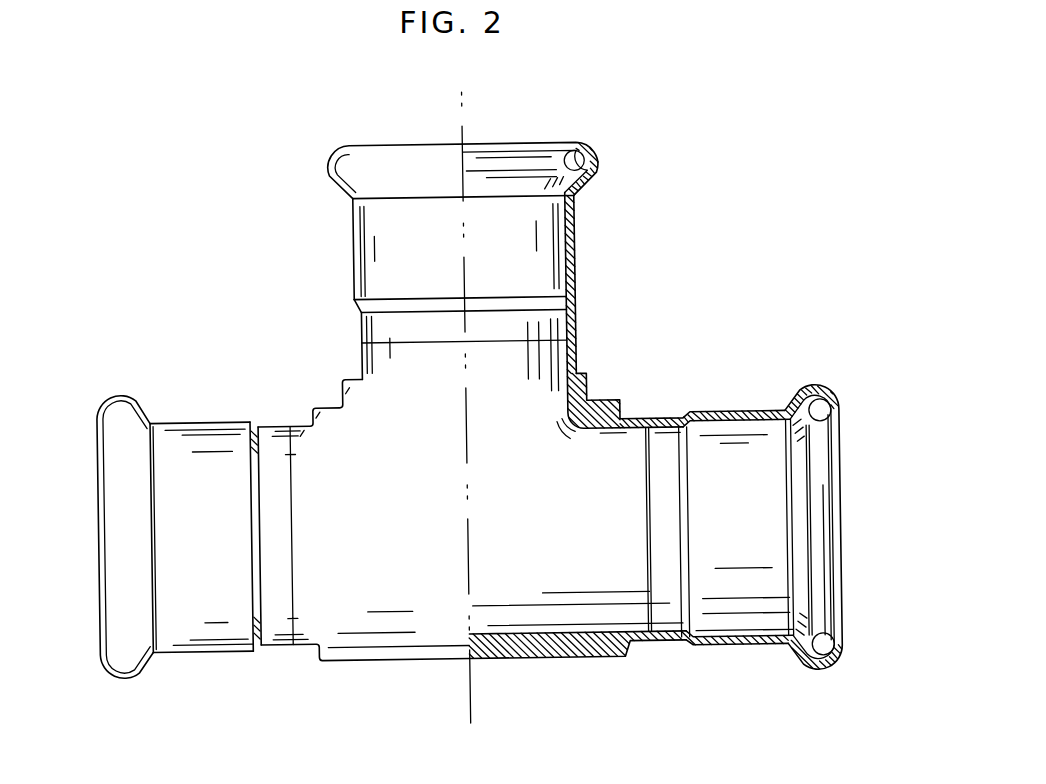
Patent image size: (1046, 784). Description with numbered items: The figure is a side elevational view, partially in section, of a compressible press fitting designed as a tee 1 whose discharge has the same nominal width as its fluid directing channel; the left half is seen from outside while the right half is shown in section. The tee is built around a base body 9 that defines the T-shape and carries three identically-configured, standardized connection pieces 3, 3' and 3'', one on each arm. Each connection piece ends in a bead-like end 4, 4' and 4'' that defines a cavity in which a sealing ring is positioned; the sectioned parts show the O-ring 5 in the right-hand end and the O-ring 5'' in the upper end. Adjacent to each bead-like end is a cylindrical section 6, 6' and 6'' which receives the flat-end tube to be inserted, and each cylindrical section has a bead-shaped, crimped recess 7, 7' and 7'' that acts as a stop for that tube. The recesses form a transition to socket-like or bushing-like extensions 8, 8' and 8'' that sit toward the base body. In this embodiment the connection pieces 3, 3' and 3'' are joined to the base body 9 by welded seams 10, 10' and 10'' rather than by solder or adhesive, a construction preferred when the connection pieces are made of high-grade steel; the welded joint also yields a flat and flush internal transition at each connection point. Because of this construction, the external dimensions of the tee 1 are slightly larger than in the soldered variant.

The tee 1 is at (705, 275).
The connection piece 3 is at (753, 468).
The connection piece 3' is at (186, 487).
The connection piece 3'' is at (412, 248).
The bead-like end 4 is at (812, 486).
The bead-like end 4' is at (94, 526).
The bead-like end 4'' is at (429, 151).
The O-ring 5 is at (860, 505).
The O-ring 5'' is at (565, 135).
The cylindrical section 6 is at (628, 480).
The cylindrical section 6' is at (201, 490).
The cylindrical section 6'' is at (623, 293).
The recess 7 is at (738, 683).
The recess 7' is at (233, 480).
The recess 7'' is at (522, 315).
The extension 8 is at (668, 574).
The inner stop of left socket 8' is at (282, 470).
The extension 8'' is at (533, 339).
The base body 9 is at (582, 402).
The welded seam 10 is at (619, 578).
The welded seam 10' is at (266, 684).
The welded seam 10'' is at (331, 317).